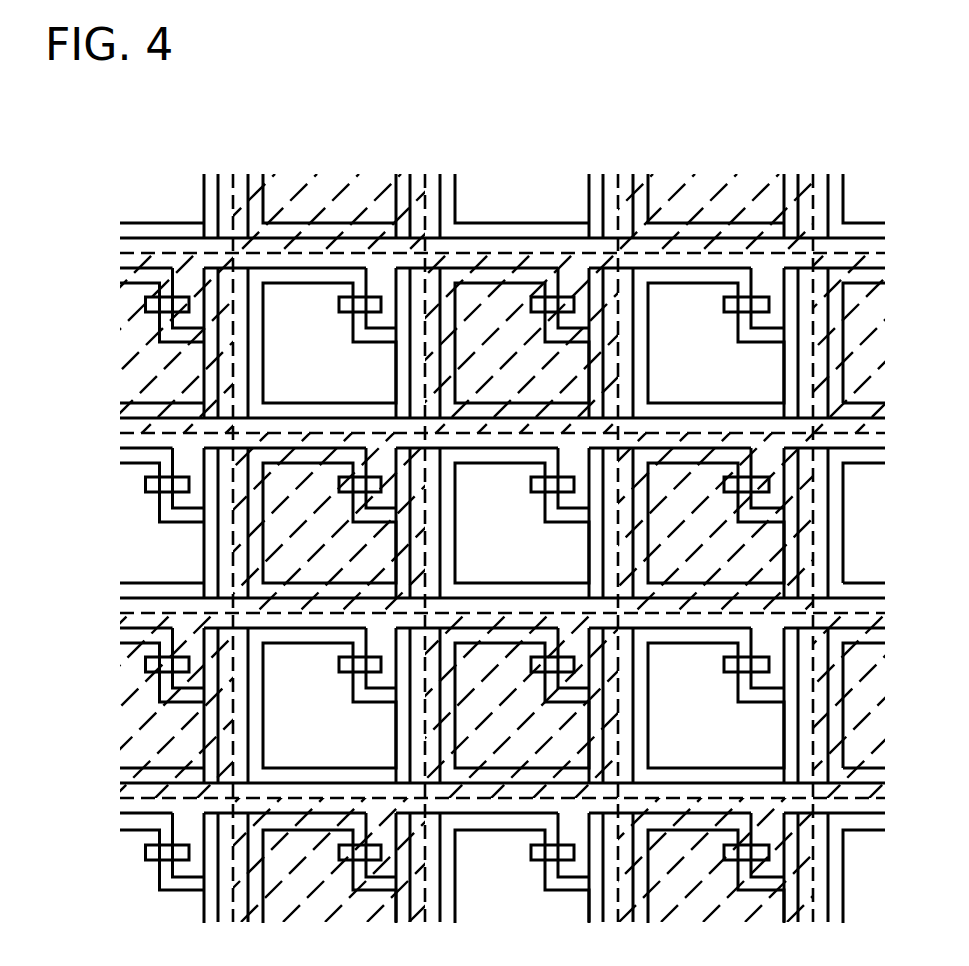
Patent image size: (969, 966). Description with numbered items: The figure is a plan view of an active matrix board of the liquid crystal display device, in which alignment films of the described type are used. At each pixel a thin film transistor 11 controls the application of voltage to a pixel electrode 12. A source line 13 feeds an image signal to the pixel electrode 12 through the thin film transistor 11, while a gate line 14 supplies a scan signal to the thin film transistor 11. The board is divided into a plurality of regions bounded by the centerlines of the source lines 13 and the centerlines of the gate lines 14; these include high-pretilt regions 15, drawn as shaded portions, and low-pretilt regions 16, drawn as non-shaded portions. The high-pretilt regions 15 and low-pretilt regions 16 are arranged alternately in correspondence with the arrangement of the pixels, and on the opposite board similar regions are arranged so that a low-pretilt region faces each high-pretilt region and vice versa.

The thin film transistor 11 is at (745, 300).
The pixel electrode 12 is at (692, 282).
The source line 13 is at (665, 237).
The gate line 14 is at (825, 290).
The high-pretilt region 15 is at (490, 300).
The low-pretilt region 16 is at (302, 305).